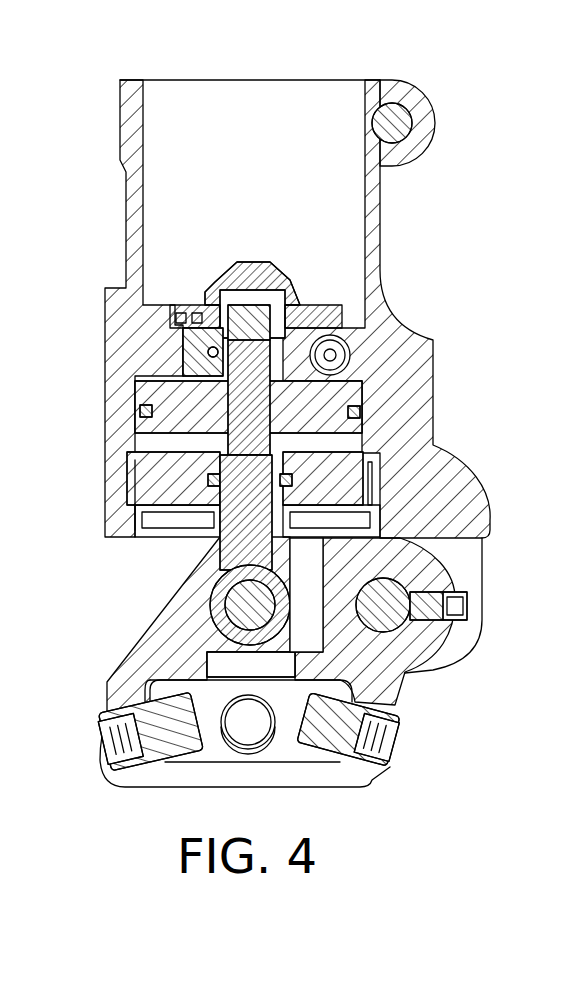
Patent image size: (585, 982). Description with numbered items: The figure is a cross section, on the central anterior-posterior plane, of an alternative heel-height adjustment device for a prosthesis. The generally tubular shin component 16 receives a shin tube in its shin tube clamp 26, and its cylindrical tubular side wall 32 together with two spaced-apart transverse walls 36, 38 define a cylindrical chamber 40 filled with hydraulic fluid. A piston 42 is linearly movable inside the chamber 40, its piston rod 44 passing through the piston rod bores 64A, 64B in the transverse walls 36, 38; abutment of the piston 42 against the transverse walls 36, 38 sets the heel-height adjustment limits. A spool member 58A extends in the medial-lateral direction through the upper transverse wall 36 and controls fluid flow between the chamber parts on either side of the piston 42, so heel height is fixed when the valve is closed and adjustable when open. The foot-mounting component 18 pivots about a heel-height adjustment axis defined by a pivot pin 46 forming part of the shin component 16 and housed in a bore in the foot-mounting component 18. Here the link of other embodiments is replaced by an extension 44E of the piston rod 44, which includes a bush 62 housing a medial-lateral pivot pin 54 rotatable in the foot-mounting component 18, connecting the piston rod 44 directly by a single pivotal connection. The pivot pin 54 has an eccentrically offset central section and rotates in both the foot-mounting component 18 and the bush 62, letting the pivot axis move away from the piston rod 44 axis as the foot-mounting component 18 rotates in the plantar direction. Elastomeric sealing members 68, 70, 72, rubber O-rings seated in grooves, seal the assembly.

The shin component 16 is at (468, 218).
The foot-mounting component 18 is at (108, 680).
The shin tube clamp 26 is at (417, 107).
The tubular side wall 32 is at (105, 417).
The upper transverse wall 36 is at (205, 367).
The lower transverse wall 38 is at (145, 472).
The cylindrical chamber 40 is at (400, 455).
The piston 42 is at (178, 400).
The piston rod 44 is at (255, 330).
The piston rod extension 44E is at (248, 553).
The pivot pin 46 is at (440, 583).
The medial-lateral pivot pin 54 is at (240, 606).
The spool member 58A is at (340, 356).
The bush 62 is at (215, 625).
The piston rod bore 64A is at (365, 385).
The piston rod bore 64B is at (440, 506).
The elastomeric sealing member 68 is at (360, 414).
The elastomeric sealing member 70 is at (190, 352).
The elastomeric sealing member 72 is at (135, 488).